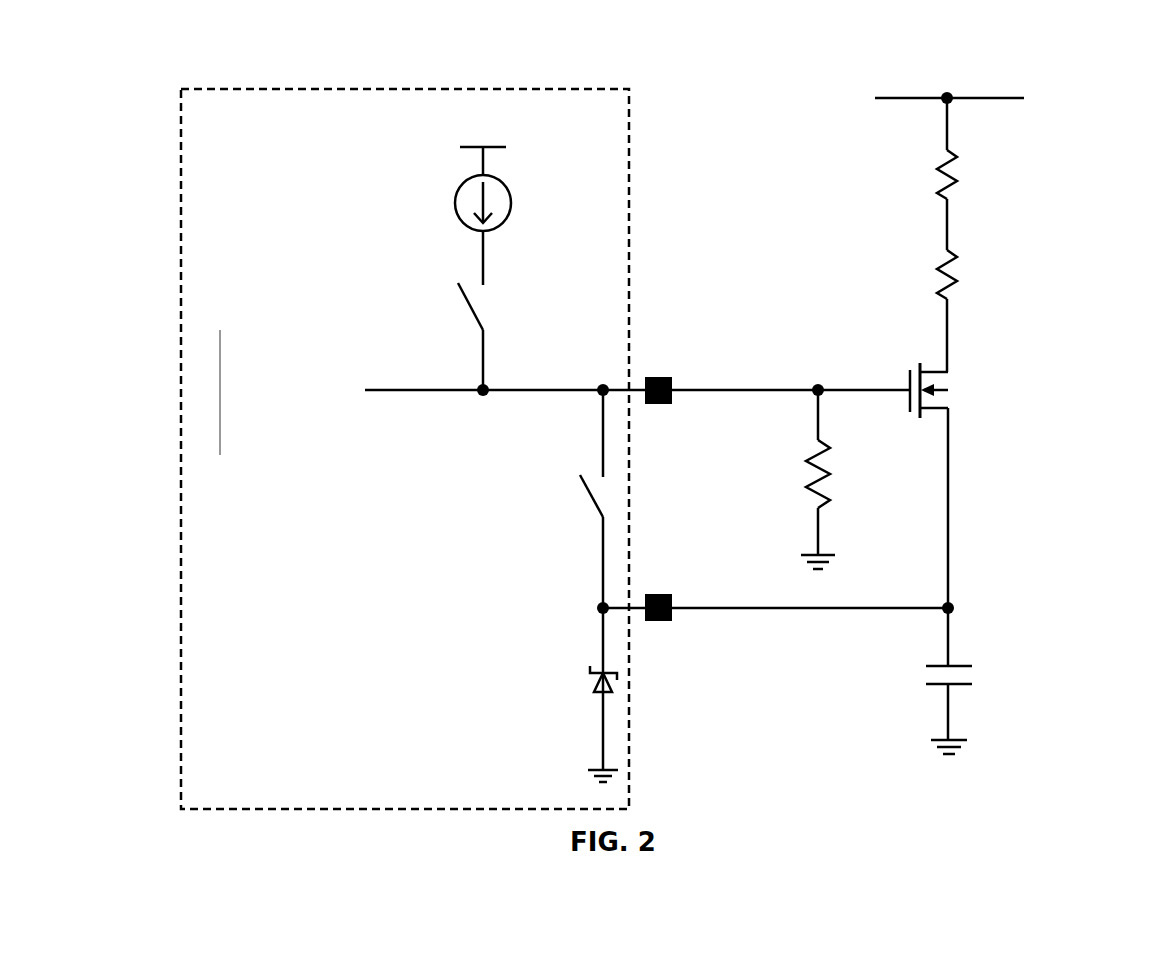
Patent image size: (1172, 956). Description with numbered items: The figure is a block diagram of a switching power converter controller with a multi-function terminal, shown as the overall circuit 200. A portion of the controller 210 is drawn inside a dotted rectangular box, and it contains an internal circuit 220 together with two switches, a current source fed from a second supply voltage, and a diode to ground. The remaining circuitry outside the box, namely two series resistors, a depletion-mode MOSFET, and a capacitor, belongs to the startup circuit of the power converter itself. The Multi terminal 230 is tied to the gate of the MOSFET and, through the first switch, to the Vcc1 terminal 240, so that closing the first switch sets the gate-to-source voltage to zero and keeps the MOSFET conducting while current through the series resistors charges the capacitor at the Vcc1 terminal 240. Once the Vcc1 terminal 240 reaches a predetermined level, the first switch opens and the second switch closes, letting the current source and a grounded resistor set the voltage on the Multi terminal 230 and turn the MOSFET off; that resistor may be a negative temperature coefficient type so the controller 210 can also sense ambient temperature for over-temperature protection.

The power supply circuit 200 is at (1146, 65).
The controller 210 is at (413, 449).
The internal circuit 220 is at (273, 392).
The Multi terminal 230 is at (687, 392).
The Vcc1 terminal 240 is at (686, 610).